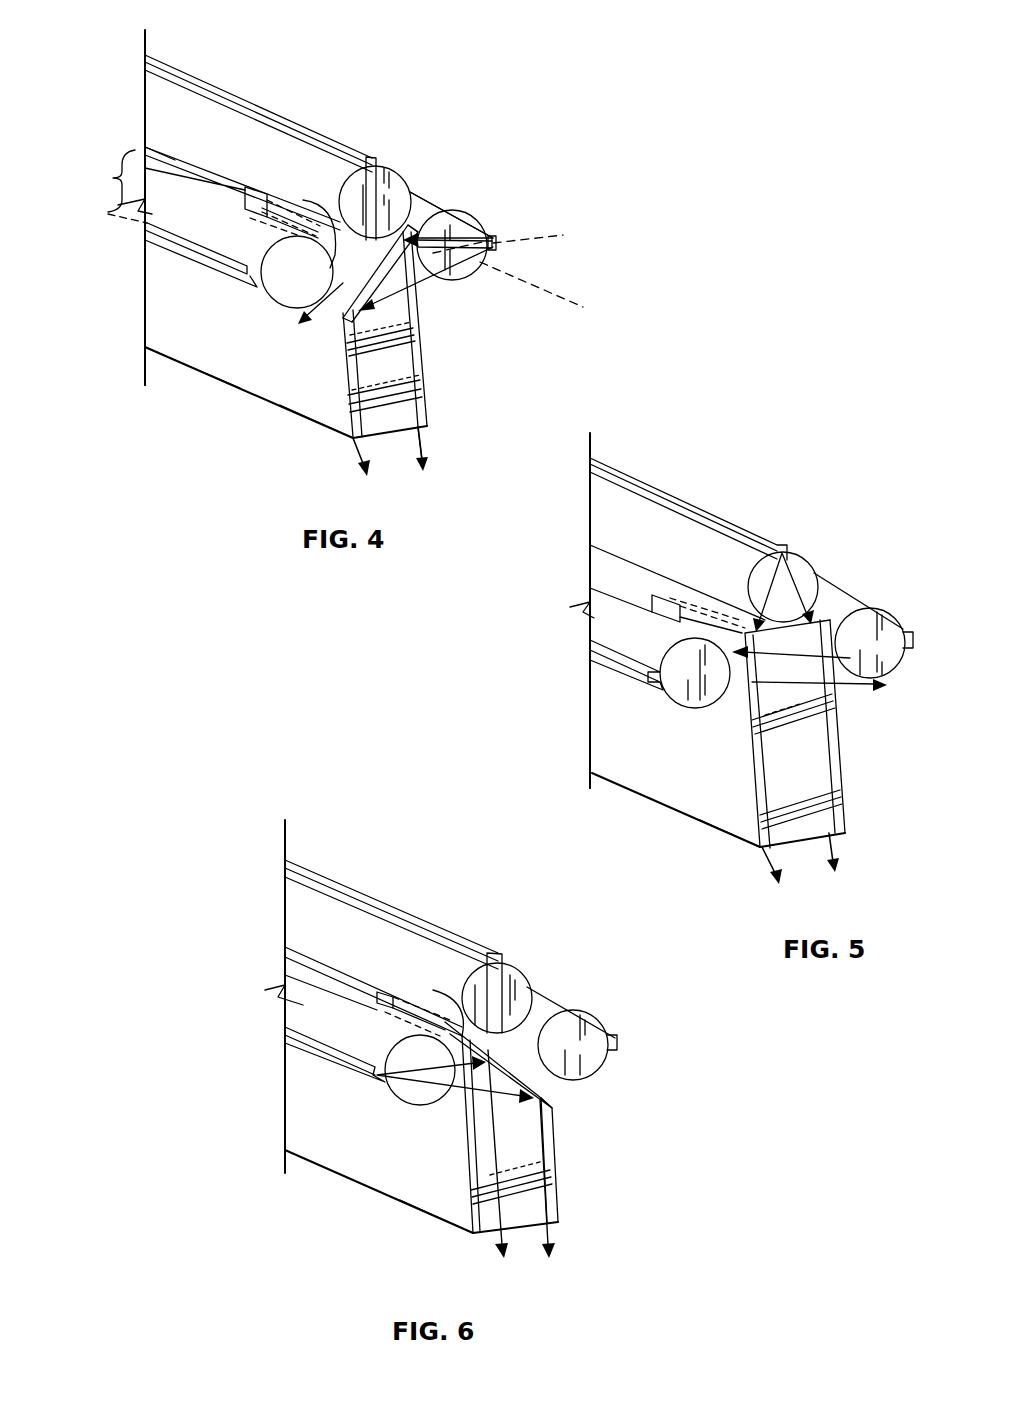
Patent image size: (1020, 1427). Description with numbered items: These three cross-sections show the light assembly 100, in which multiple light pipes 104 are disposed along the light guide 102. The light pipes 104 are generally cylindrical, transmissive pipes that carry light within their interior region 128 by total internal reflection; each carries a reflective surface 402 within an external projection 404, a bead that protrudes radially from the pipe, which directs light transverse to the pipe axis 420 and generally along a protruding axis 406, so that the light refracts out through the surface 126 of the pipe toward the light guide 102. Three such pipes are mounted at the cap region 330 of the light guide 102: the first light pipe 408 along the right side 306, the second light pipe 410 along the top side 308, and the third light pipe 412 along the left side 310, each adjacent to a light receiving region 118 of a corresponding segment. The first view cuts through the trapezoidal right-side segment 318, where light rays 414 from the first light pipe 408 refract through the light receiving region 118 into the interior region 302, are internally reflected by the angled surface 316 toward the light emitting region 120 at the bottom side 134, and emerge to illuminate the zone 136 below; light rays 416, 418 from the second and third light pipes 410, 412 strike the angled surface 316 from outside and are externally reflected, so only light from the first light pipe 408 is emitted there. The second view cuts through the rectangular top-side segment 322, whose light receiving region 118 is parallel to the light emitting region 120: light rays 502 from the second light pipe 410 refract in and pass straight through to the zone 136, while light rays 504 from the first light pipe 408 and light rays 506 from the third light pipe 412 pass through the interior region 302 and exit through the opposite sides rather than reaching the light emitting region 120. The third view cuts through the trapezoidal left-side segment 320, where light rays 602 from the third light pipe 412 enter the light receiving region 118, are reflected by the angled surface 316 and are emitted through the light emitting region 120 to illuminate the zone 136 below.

In FIG. 4, the light assembly 100 is at (120, 34).
In FIG. 5, the light assembly 100 is at (850, 460).
In FIG. 6, the light assembly 100 is at (233, 802).
In FIG. 4, the light guide 102 is at (303, 405).
In FIG. 5, the light guide 102 is at (712, 815).
In FIG. 6, the light guide 102 is at (342, 1168).
In FIG. 4, the light pipes 104 is at (265, 133).
In FIG. 6, the light pipes 104 is at (355, 920).
In FIG. 4, the light receiving region 118 is at (160, 140).
In FIG. 5, the light receiving region 118 is at (590, 612).
In FIG. 6, the light receiving region 118 is at (468, 960).
In FIG. 4, the light emitting region 120 is at (353, 445).
In FIG. 5, the light emitting region 120 is at (770, 853).
In FIG. 6, the light emitting region 120 is at (490, 1237).
In FIG. 4, the surface 126 is at (418, 208).
In FIG. 4, the interior region 128 is at (487, 230).
In FIG. 4, the bottom side 134 is at (417, 437).
In FIG. 4, the zone 136 is at (402, 472).
In FIG. 5, the zone 136 is at (818, 872).
In FIG. 6, the zone 136 is at (532, 1255).
In FIG. 4, the interior region 302 is at (392, 350).
In FIG. 5, the interior region 302 is at (803, 723).
In FIG. 6, the interior region 302 is at (525, 1190).
In FIG. 4, the right side 306 is at (423, 330).
In FIG. 5, the right side 306 is at (843, 782).
In FIG. 4, the top side 308 is at (165, 147).
In FIG. 4, the left side 310 is at (160, 320).
In FIG. 5, the left side 310 is at (603, 750).
In FIG. 4, the angled surface 316 is at (363, 252).
In FIG. 6, the angled surface 316 is at (555, 1100).
In FIG. 4, the right-side segment 318 is at (305, 432).
In FIG. 4, the left-side segment 320 is at (198, 382).
In FIG. 6, the left-side segment 320 is at (420, 1222).
In FIG. 4, the top-side segment 322 is at (158, 362).
In FIG. 5, the top-side segment 322 is at (728, 852).
In FIG. 4, the cap region 330 is at (96, 181).
In FIG. 4, the reflective surface 402 is at (493, 242).
In FIG. 4, the external projection 404 is at (343, 140).
In FIG. 4, the protruding axis 406 is at (530, 243).
In FIG. 4, the first light pipe 408 is at (415, 213).
In FIG. 5, the first light pipe 408 is at (820, 595).
In FIG. 6, the first light pipe 408 is at (548, 1010).
In FIG. 4, the second light pipe 410 is at (307, 153).
In FIG. 5, the second light pipe 410 is at (745, 555).
In FIG. 6, the second light pipe 410 is at (415, 940).
In FIG. 4, the third light pipe 412 is at (227, 210).
In FIG. 5, the third light pipe 412 is at (665, 640).
In FIG. 6, the third light pipe 412 is at (363, 1023).
In FIG. 4, the light rays 414 is at (440, 280).
In FIG. 4, the light rays 416 is at (312, 318).
In FIG. 4, the light rays 418 is at (310, 210).
In FIG. 4, the pipe axis 420 is at (577, 307).
In FIG. 5, the light rays 502 is at (790, 568).
In FIG. 5, the light rays 504 is at (850, 615).
In FIG. 5, the light rays 506 is at (872, 690).
In FIG. 6, the light rays 602 is at (345, 1078).